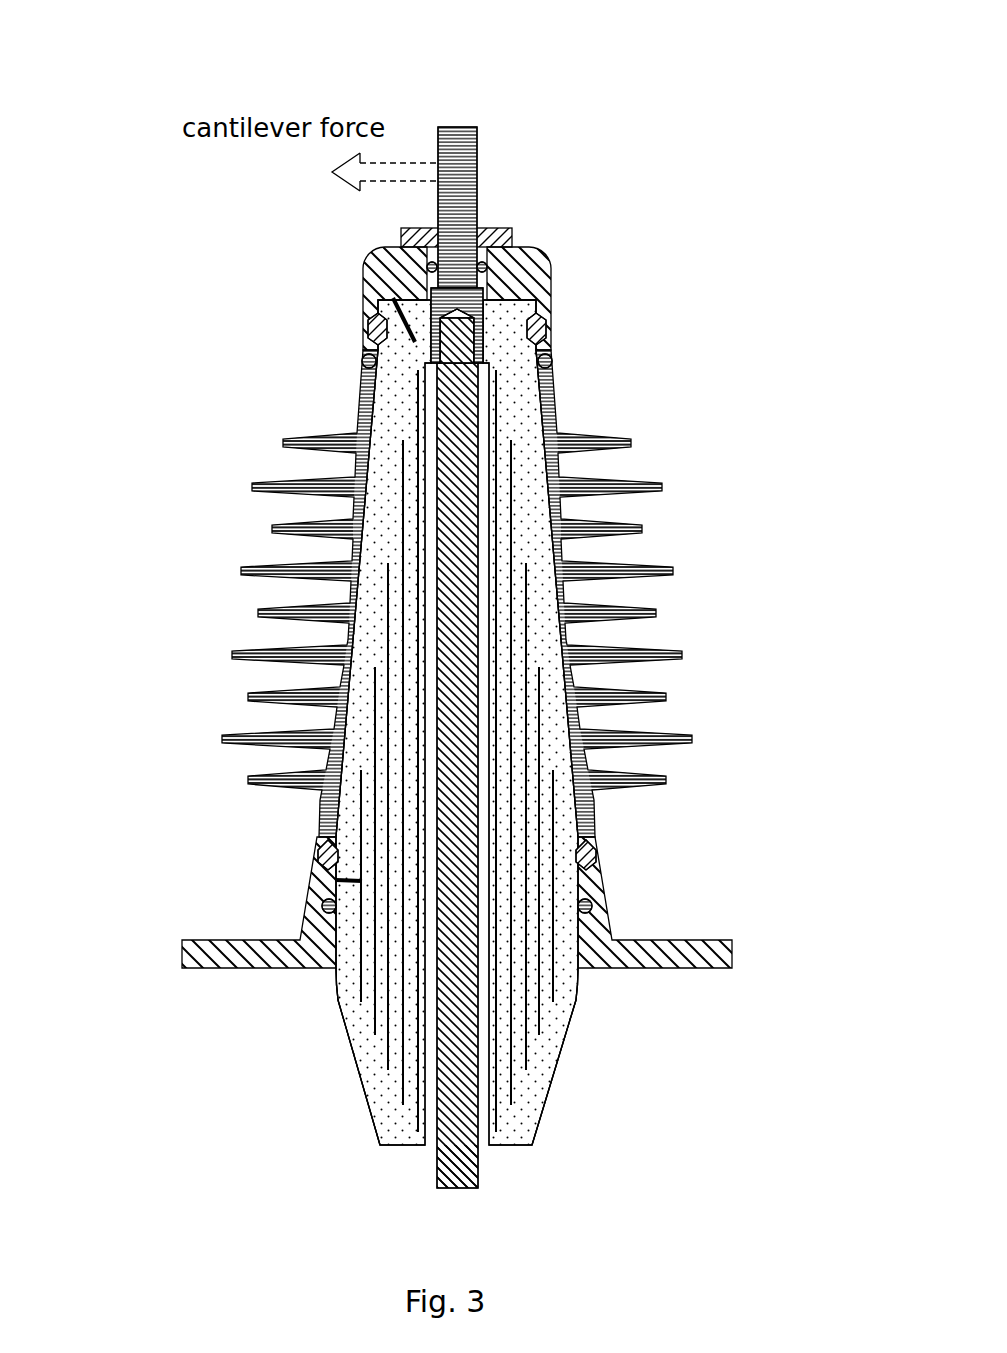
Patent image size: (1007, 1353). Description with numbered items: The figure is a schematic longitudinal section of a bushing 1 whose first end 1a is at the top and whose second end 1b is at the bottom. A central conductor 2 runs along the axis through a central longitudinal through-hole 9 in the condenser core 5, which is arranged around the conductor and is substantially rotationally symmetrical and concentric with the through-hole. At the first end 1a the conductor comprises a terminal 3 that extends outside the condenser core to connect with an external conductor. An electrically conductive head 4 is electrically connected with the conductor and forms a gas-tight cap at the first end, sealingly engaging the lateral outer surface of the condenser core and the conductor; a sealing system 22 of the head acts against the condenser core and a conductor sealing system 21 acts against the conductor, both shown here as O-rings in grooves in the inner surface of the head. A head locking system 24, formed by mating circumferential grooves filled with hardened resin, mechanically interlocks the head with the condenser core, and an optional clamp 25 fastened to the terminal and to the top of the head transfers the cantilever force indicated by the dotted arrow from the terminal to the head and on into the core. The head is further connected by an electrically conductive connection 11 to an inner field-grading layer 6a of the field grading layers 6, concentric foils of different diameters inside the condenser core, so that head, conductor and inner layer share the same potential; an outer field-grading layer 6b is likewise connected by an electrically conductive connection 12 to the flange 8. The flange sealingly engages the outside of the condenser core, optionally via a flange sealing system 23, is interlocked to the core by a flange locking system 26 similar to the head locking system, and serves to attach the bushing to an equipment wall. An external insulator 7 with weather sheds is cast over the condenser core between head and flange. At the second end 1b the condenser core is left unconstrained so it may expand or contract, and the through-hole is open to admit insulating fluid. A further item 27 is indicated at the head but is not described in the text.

The bushing 1 is at (609, 78).
The first end of the bushing 1a is at (326, 245).
The second end of the bushing 1b is at (560, 1134).
The conductor 2 is at (457, 563).
The terminal 3 is at (455, 155).
The electrically conductive head 4 is at (550, 268).
The condenser core 5 is at (555, 720).
The field grading layers 6 is at (438, 747).
The inner field-grading layer 6a is at (407, 403).
The lower housing 6b is at (362, 975).
The external insulator 7 is at (333, 648).
The flange 8 is at (612, 937).
The central longitudinal through-hole 9 is at (473, 1075).
The electrically conductive connection 11 is at (372, 337).
The electrically conductive connection 12 is at (318, 848).
The conductor sealing system 21 is at (428, 267).
The sealing system 22 is at (550, 367).
The flange sealing system 23 is at (603, 897).
The head locking system 24 is at (548, 320).
The clamp 25 is at (402, 230).
The flange locking system 26 is at (593, 847).
The sleeve 27 is at (482, 348).